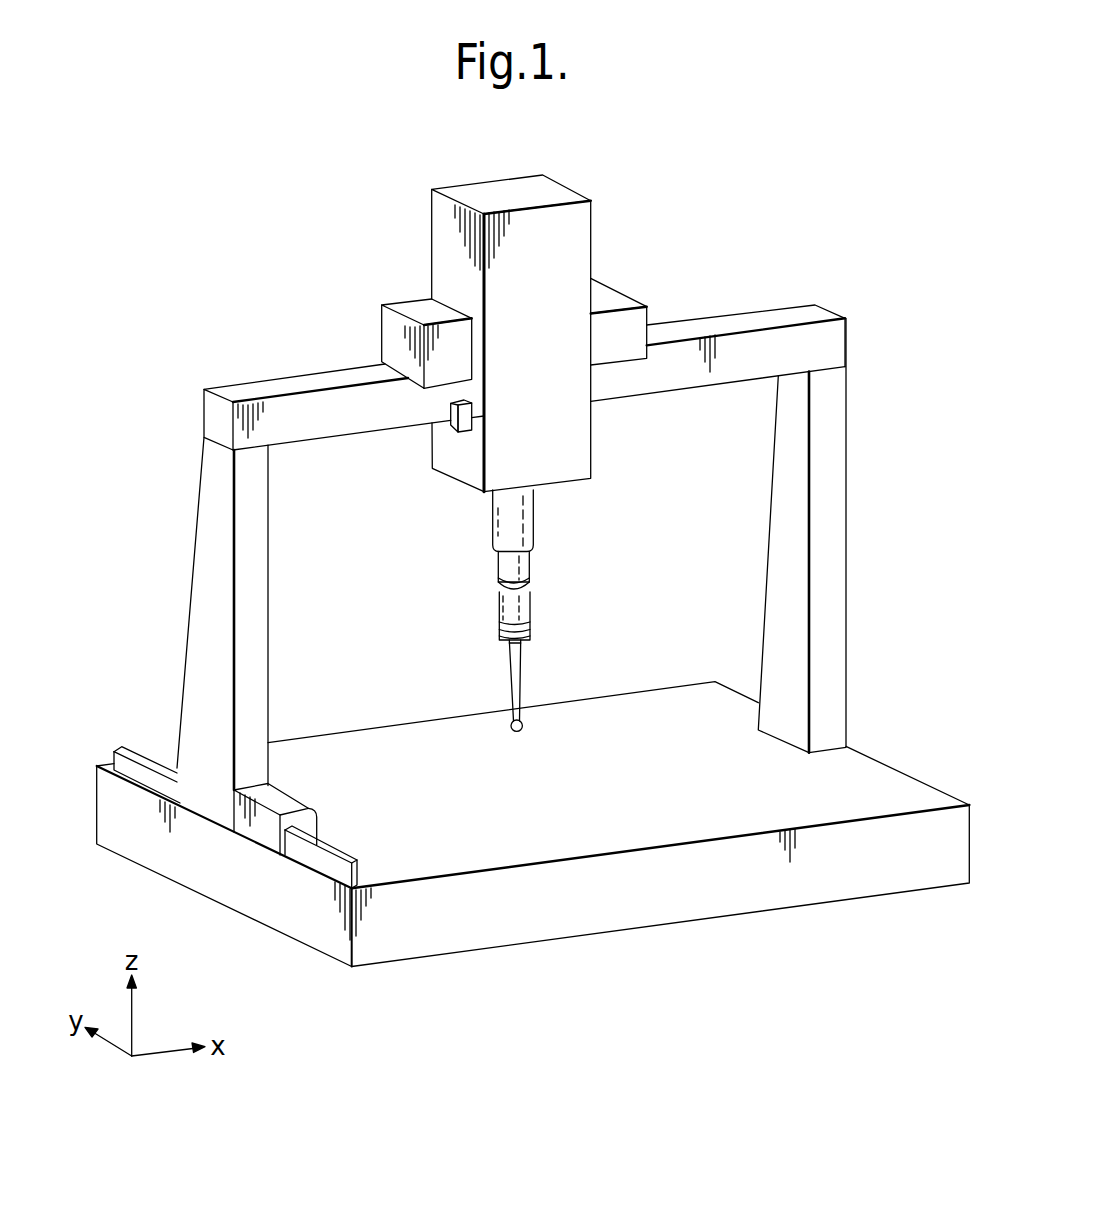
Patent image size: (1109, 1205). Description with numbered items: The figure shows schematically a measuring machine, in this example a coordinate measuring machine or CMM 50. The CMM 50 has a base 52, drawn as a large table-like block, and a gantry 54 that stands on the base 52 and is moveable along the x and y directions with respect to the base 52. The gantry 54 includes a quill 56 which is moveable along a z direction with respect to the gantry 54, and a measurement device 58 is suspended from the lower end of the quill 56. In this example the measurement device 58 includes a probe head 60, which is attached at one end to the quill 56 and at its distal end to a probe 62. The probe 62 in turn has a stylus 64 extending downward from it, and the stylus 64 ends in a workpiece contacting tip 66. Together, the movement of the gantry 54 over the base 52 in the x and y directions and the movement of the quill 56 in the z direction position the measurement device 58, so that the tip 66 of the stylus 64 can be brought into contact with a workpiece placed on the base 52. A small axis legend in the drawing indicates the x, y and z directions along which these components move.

The coordinate measuring machine 50 is at (652, 217).
The base 52 is at (810, 800).
The gantry 54 is at (836, 492).
The quill 56 is at (523, 536).
The measurement device 58 is at (548, 552).
The probe head 60 is at (507, 573).
The probe 62 is at (510, 612).
The stylus 64 is at (513, 677).
The workpiece contacting tip 66 is at (515, 732).